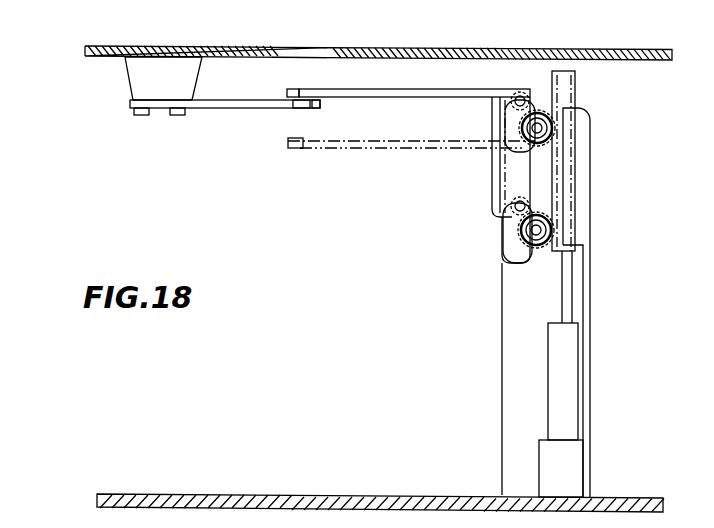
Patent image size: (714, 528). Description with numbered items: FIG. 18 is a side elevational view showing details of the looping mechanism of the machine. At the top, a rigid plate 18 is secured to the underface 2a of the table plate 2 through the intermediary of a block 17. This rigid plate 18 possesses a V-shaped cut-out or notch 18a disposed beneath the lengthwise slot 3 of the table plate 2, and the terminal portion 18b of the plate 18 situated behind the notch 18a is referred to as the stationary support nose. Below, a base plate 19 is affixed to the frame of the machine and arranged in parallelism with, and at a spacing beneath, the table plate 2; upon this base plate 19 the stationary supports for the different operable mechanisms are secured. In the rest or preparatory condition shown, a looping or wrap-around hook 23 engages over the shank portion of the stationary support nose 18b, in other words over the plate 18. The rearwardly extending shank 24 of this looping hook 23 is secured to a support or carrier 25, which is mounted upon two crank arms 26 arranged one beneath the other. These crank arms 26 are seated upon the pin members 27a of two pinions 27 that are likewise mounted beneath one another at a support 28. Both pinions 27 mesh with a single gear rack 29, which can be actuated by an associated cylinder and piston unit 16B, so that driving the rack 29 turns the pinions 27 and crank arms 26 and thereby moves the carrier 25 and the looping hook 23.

The table plate 2 is at (222, 47).
The underface of the table plate 2a is at (88, 54).
The lengthwise slot 3 is at (318, 52).
The block 17 is at (155, 73).
The rigid plate 18 is at (210, 106).
The V-shaped cut-out or notch 18a is at (302, 108).
The terminal portion of the plate (stationary support nose) 18b is at (316, 108).
The base plate 19 is at (251, 500).
The looping or wrap-around hook 23 is at (288, 93).
The rearwardly extending shank 24 is at (382, 96).
The support or carrier 25 is at (510, 178).
The crank arms 26 is at (540, 106).
The pinions 27 is at (547, 147).
The pin members 27a is at (533, 130).
The support 28 is at (513, 318).
The gear rack 29 is at (569, 80).
The cylinder and piston unit 16B is at (567, 457).